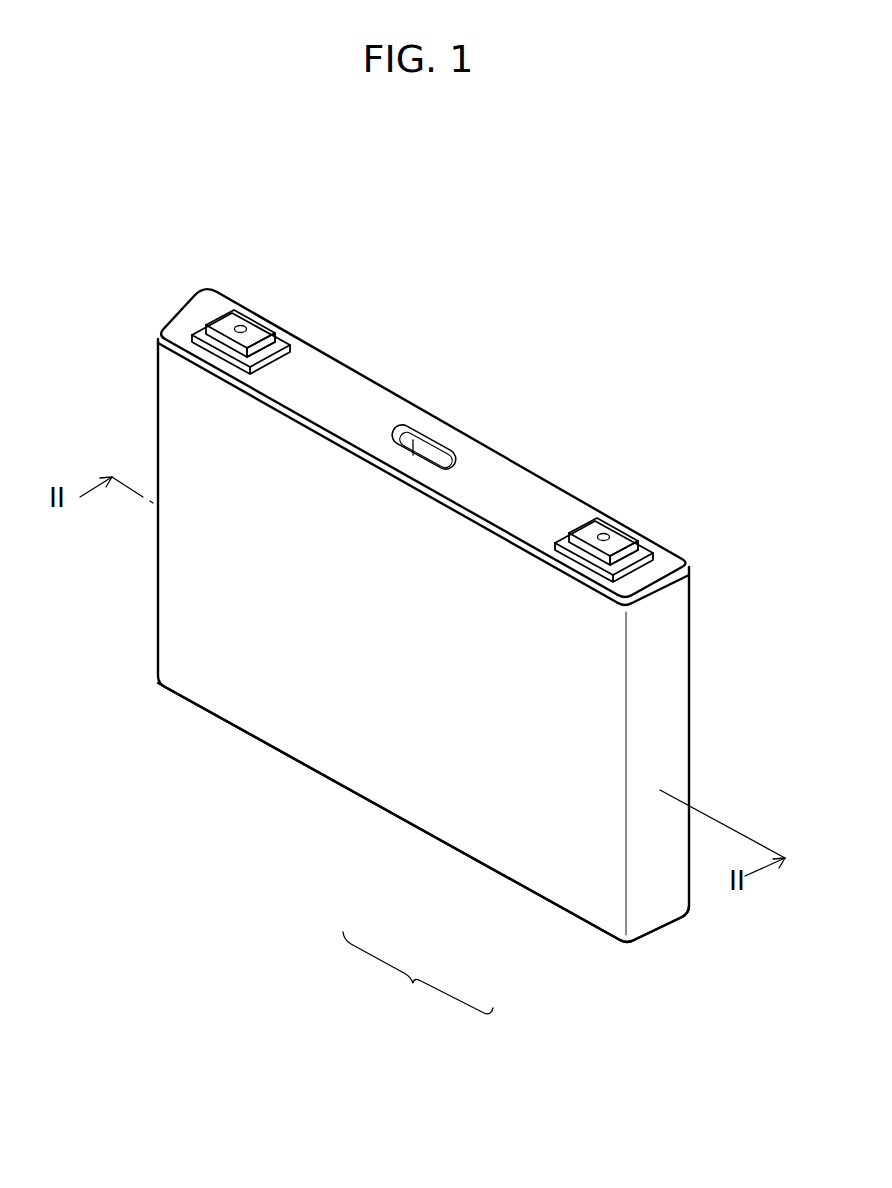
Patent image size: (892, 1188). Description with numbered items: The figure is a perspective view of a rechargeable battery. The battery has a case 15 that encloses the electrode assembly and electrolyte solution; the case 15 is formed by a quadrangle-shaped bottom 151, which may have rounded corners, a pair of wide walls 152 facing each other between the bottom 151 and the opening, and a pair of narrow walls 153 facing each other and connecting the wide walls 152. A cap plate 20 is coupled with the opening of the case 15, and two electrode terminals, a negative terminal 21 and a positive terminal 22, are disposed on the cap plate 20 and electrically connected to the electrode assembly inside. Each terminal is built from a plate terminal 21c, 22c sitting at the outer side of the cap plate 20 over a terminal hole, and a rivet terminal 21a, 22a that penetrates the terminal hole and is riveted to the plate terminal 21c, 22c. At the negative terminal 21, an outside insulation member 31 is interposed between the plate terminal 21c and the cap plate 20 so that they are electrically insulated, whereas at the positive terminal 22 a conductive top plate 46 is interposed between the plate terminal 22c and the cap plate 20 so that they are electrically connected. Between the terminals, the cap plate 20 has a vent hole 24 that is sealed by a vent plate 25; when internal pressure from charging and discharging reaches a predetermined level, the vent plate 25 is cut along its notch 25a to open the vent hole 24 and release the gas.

The case 15 is at (418, 973).
The bottom 151 is at (445, 847).
The wide walls 152 is at (527, 855).
The narrow walls 153 is at (658, 870).
The cap plate 20 is at (335, 383).
The negative terminal 21 is at (219, 320).
The rivet terminal 21a is at (242, 325).
The plate terminal 21c is at (258, 332).
The positive terminal 22 is at (600, 518).
The rivet terminal 22a is at (605, 533).
The plate terminal 22c is at (623, 538).
The vent hole 24 is at (405, 430).
The vent plate 25 is at (427, 447).
The notch 25a is at (433, 460).
The outside insulation member 31 is at (200, 330).
The conductive top plate 46 is at (642, 548).